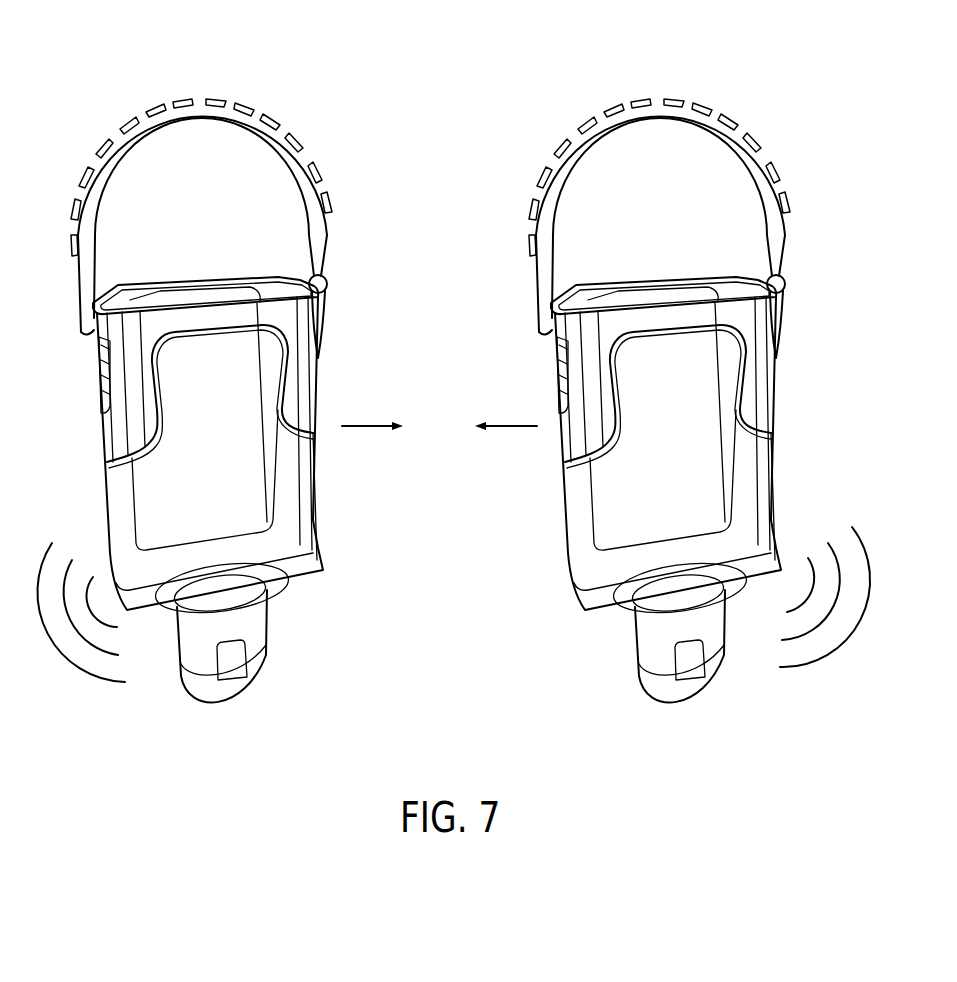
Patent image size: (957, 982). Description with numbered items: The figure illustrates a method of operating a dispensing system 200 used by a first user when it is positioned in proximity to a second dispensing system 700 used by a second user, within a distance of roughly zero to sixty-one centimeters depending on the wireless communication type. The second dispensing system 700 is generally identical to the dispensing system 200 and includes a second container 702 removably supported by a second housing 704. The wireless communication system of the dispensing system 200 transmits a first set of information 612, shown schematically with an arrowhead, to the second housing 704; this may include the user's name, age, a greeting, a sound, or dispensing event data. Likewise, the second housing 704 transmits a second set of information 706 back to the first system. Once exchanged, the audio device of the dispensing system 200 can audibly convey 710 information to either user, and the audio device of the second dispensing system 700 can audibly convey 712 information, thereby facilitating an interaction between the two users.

The dispensing system 200 is at (70, 71).
The second dispensing system 700 is at (758, 71).
The second container 702 is at (687, 443).
The second housing 704 is at (681, 256).
The second set of information 706 is at (512, 427).
The first set of information 612 is at (367, 427).
The audibly convey 710 is at (73, 660).
The audibly convey 712 is at (828, 645).